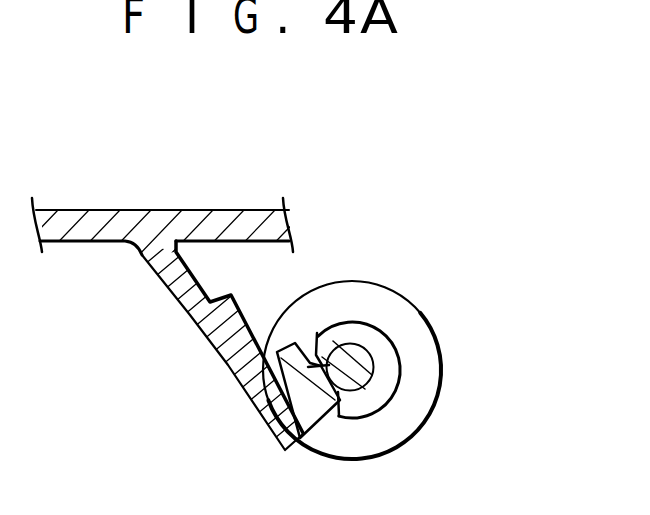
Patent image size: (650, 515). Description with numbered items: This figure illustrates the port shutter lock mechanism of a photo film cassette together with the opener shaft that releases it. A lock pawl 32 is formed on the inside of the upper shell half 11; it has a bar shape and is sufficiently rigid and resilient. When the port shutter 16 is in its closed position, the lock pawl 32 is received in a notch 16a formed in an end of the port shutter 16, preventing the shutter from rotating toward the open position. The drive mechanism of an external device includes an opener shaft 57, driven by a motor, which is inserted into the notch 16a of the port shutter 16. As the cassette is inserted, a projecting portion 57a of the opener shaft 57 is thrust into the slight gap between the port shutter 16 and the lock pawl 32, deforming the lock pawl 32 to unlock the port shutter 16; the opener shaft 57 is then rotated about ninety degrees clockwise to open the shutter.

The upper shell half 11 is at (149, 199).
The port shutter 16 is at (415, 298).
The notch 16a is at (368, 365).
The lock pawl 32 is at (220, 353).
The opener shaft 57 is at (331, 432).
The projecting portion 57a is at (281, 350).